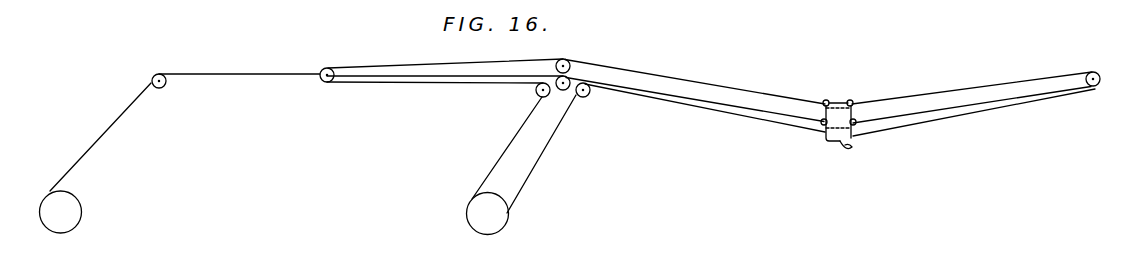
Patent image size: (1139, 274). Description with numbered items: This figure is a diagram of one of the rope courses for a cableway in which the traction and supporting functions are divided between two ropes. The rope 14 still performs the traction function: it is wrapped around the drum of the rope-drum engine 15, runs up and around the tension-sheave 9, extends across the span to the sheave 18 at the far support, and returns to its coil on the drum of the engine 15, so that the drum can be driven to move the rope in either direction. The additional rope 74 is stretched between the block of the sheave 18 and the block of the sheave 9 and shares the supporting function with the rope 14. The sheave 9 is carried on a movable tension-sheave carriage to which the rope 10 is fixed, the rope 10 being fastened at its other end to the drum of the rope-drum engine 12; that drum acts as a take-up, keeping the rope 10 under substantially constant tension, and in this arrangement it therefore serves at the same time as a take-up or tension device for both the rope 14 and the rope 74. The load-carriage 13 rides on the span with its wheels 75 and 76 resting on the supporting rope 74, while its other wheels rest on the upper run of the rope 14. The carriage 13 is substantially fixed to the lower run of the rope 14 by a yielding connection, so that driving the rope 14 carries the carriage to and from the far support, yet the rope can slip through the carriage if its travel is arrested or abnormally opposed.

The tension-sheave 9 is at (325, 83).
The rope 10 is at (233, 77).
The rope-drum engine 12 is at (61, 212).
The load-carriage 13 is at (835, 103).
The rope 14 is at (948, 90).
The rope-drum engine 15 is at (488, 214).
The sheave 18 is at (1093, 71).
The additional rope 74 is at (943, 109).
The wheel 75 is at (856, 112).
The wheel 76 is at (820, 128).